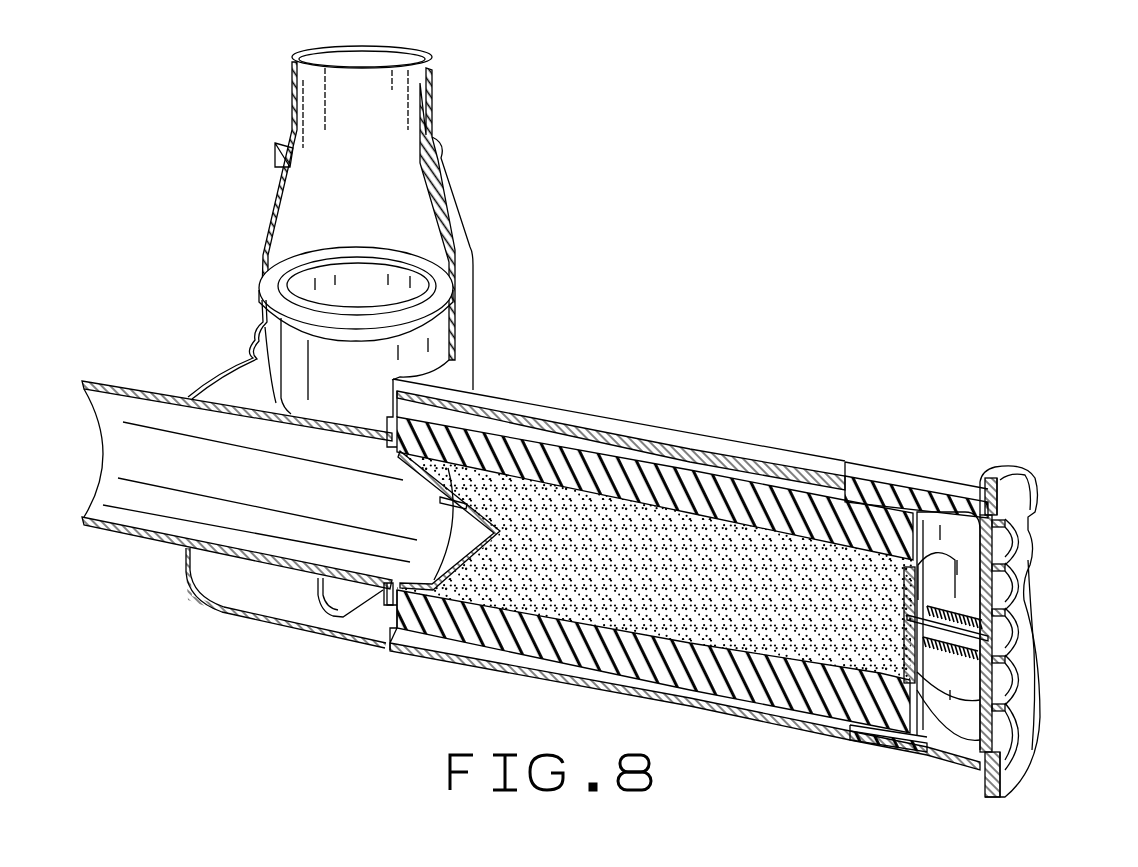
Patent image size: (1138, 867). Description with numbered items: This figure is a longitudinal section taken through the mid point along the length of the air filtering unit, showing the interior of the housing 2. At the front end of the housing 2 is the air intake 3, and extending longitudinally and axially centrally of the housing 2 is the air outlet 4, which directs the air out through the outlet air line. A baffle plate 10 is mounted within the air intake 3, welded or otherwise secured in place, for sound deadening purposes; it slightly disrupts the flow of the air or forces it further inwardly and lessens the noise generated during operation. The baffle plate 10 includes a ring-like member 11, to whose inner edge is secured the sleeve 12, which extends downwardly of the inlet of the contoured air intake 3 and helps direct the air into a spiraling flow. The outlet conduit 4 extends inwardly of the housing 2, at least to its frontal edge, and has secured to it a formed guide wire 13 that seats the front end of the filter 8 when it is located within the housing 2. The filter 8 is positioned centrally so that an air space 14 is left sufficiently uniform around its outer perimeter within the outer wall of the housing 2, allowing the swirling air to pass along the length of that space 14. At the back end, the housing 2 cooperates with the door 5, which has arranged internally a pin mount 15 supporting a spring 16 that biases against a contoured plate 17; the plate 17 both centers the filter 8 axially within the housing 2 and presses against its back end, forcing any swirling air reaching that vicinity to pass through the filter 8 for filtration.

The housing 2 is at (760, 460).
The air intake 3 is at (478, 236).
The air outlet 4 is at (277, 488).
The door 5 is at (1013, 763).
The filter 8 is at (760, 697).
The baffle plate 10 is at (250, 277).
The ring-like member 11 is at (260, 296).
The sleeve 12 is at (437, 350).
The guide wire 13 is at (420, 562).
The air space 14 is at (615, 457).
The pin mount 15 is at (990, 631).
The spring 16 is at (962, 660).
The contoured plate 17 is at (935, 558).